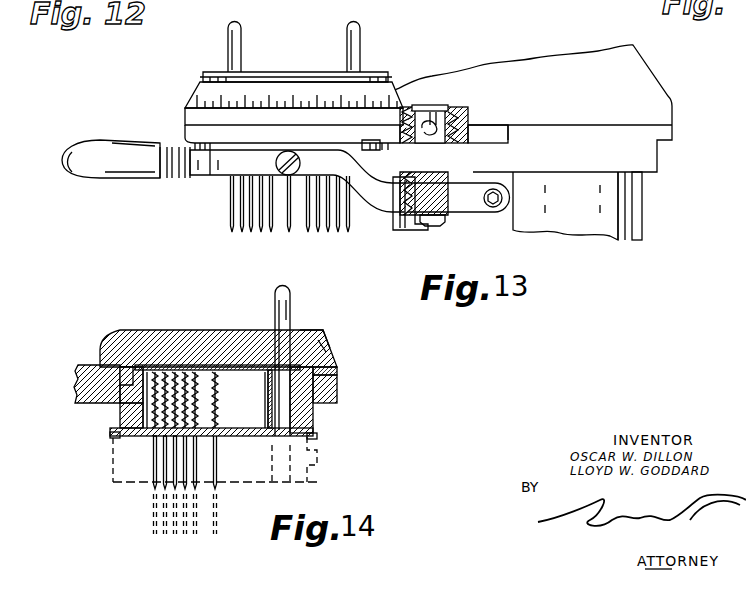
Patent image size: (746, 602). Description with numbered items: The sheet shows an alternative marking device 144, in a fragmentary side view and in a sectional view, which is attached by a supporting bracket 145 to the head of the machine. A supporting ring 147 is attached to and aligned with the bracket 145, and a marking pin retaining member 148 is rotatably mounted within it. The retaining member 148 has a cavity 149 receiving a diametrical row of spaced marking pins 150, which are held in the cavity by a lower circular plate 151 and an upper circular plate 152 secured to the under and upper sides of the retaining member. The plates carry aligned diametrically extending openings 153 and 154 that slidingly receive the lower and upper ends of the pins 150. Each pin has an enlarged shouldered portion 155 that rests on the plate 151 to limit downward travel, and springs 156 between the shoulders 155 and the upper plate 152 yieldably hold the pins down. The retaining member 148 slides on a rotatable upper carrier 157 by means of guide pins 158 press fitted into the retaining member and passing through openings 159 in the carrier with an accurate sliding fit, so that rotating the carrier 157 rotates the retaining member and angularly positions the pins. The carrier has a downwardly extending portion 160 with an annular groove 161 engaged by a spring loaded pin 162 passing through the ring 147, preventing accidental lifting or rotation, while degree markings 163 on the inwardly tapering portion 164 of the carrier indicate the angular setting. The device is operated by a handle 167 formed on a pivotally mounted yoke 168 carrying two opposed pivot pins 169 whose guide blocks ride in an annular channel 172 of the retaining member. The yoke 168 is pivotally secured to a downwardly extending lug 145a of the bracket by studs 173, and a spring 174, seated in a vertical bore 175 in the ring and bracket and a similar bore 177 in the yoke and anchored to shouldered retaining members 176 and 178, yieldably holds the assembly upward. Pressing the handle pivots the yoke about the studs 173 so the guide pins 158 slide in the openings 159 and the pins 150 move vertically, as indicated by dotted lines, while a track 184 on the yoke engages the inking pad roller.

In FIG. 13, the marking device 144 is at (410, 46).
In FIG. 14, the marking device 144 is at (177, 320).
In FIG. 13, the supporting bracket 145 is at (655, 150).
In FIG. 13, the downwardly extending lug 145a is at (500, 218).
In FIG. 13, the supporting ring 147 is at (196, 118).
In FIG. 14, the supporting ring 147 is at (338, 387).
In FIG. 13, the marking pin retaining member 148 is at (195, 130).
In FIG. 14, the marking pin retaining member 148 is at (313, 413).
In FIG. 14, the cavity 149 is at (238, 432).
In FIG. 13, the marking pins 150 is at (328, 237).
In FIG. 14, the marking pins 150 is at (178, 496).
In FIG. 14, the circular plate 151 is at (262, 470).
In FIG. 14, the circular plate 152 is at (248, 364).
In FIG. 14, the openings 153 is at (180, 444).
In FIG. 14, the openings 154 is at (173, 370).
In FIG. 14, the enlarged shouldered portions 155 is at (226, 428).
In FIG. 14, the springs 156 is at (212, 364).
In FIG. 14, the upper carrier 157 is at (316, 350).
In FIG. 13, the guide pins 158 is at (346, 32).
In FIG. 14, the guide pins 158 is at (285, 306).
In FIG. 14, the openings 159 is at (316, 331).
In FIG. 14, the downwardly extending portion 160 is at (76, 366).
In FIG. 14, the annular groove 161 is at (128, 372).
In FIG. 14, the spring loaded pin 162 is at (334, 371).
In FIG. 13, the degree markings 163 is at (328, 100).
In FIG. 13, the inwardly tapering portion 164 is at (197, 94).
In FIG. 14, the inwardly tapering portion 164 is at (118, 342).
In FIG. 13, the handle 167 is at (75, 178).
In FIG. 13, the yoke 168 is at (222, 170).
In FIG. 13, the pivot pins 169 is at (301, 163).
In FIG. 13, the annular channel 172 is at (370, 140).
In FIG. 14, the annular channel 172 is at (318, 436).
In FIG. 13, the studs 173 is at (502, 198).
In FIG. 13, the spring 174 is at (468, 126).
In FIG. 13, the vertically extending bore 175 is at (457, 116).
In FIG. 13, the shouldered retaining member 176 is at (436, 107).
In FIG. 13, the bore 177 is at (452, 218).
In FIG. 13, the second shouldered retaining member 178 is at (440, 224).
In FIG. 13, the track 184 is at (406, 230).